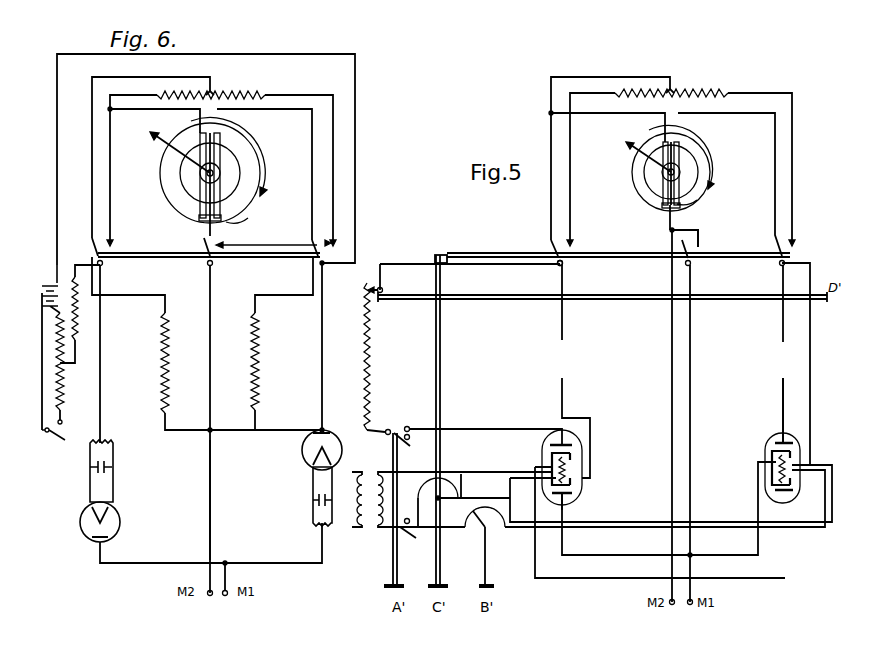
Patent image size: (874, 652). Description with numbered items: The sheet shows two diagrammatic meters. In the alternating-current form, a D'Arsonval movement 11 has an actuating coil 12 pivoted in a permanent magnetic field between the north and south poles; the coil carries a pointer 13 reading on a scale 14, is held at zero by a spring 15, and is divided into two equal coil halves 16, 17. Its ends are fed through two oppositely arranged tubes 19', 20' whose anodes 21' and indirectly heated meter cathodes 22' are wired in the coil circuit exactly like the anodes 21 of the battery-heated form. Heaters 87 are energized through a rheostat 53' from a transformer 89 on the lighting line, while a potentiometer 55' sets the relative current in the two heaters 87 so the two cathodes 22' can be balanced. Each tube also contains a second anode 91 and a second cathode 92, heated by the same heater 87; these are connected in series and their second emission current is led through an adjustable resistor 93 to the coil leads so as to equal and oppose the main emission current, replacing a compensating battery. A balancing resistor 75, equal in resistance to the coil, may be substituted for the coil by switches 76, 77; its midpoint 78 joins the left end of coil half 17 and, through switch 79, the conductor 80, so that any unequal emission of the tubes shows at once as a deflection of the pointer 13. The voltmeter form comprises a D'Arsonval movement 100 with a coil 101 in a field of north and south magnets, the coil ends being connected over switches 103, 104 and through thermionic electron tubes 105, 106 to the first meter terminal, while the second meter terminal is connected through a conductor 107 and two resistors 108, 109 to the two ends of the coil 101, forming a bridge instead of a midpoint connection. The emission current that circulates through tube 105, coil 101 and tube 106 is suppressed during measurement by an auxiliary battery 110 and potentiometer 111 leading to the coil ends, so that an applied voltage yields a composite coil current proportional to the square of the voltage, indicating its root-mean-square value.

In FIG. 5, the D'Arsonval movement 11 is at (611, 174).
In FIG. 5, the actuating coil 12 is at (675, 156).
In FIG. 5, the pointer 13 is at (642, 152).
In FIG. 5, the scale 14 is at (698, 131).
In FIG. 5, the spring 15 is at (658, 174).
In FIG. 5, the coil half 16 is at (690, 196).
In FIG. 5, the coil half 17 is at (663, 194).
In FIG. 5, the tube 19' is at (798, 410).
In FIG. 5, the tube 20' is at (592, 467).
In FIG. 5, the anode 21 is at (581, 507).
In FIG. 5, the anode 21' is at (763, 431).
In FIG. 5, the meter cathode 22' is at (664, 475).
In FIG. 5, the rheostat 53' is at (498, 530).
In FIG. 5, the potentiometer 55' is at (453, 471).
In FIG. 6, the balancing resistor 75 is at (236, 94).
In FIG. 5, the balancing resistor 75 is at (702, 91).
In FIG. 5, the switch 76 is at (783, 258).
In FIG. 5, the switch 77 is at (565, 263).
In FIG. 6, the midpoint 78 is at (210, 92).
In FIG. 5, the midpoint 78 is at (672, 90).
In FIG. 5, the switch 79 is at (698, 256).
In FIG. 5, the conductor 80 is at (712, 556).
In FIG. 5, the heater 87 is at (580, 470).
In FIG. 5, the transformer 89 is at (370, 512).
In FIG. 5, the second anode 91 is at (590, 436).
In FIG. 5, the second cathode 92 is at (572, 461).
In FIG. 5, the adjustable resistor 93 is at (371, 366).
In FIG. 6, the D'Arsonval movement 100 is at (228, 207).
In FIG. 6, the coil 101 is at (198, 205).
In FIG. 6, the switch 103 is at (103, 255).
In FIG. 6, the switch 104 is at (330, 255).
In FIG. 6, the thermionic electron tube 105 is at (122, 520).
In FIG. 6, the thermionic electron tube 106 is at (343, 448).
In FIG. 6, the conductor 107 is at (212, 472).
In FIG. 6, the resistor 108 is at (163, 358).
In FIG. 6, the resistor 109 is at (260, 362).
In FIG. 6, the auxiliary battery 110 is at (44, 290).
In FIG. 6, the potentiometer 111 is at (79, 318).